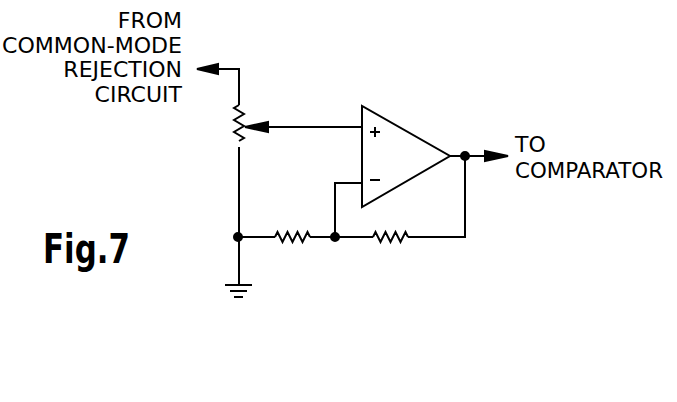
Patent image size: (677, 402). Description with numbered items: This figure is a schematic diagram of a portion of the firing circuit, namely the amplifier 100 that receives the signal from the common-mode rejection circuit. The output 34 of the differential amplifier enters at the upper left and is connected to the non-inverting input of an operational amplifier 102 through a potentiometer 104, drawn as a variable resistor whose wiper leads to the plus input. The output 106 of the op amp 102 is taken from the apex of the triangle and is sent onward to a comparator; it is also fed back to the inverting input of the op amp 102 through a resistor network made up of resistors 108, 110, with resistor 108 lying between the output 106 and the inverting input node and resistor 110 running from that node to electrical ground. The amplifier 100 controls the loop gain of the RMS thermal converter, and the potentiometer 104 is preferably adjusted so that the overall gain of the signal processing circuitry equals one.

The output of the differential amplifier 34 is at (232, 65).
The amplifier 100 is at (352, 167).
The operational amplifier 102 is at (395, 150).
The potentiometer 104 is at (237, 125).
The output of the op amp 106 is at (472, 153).
The resistor 108 is at (395, 248).
The resistor 110 is at (290, 248).